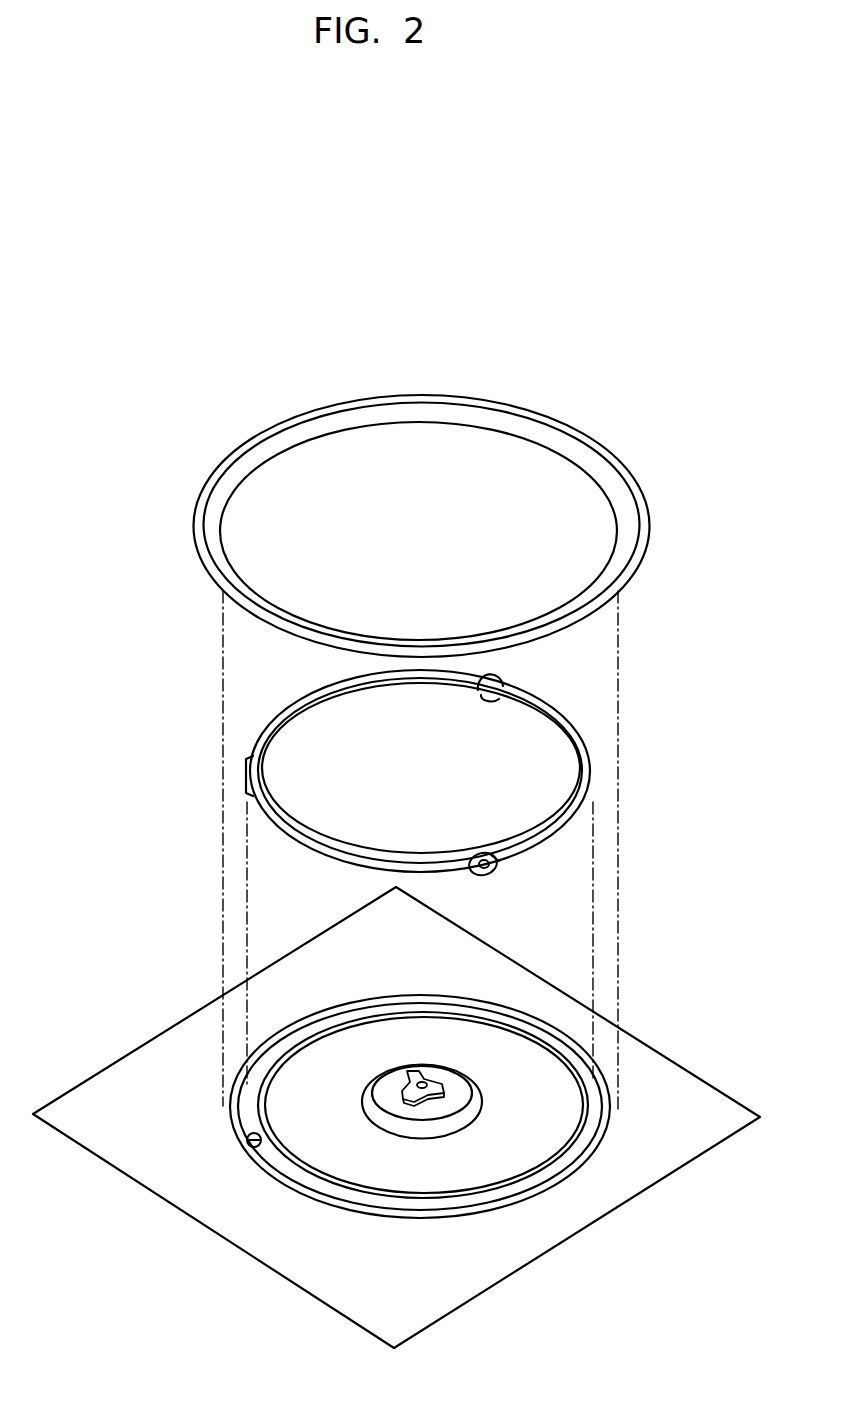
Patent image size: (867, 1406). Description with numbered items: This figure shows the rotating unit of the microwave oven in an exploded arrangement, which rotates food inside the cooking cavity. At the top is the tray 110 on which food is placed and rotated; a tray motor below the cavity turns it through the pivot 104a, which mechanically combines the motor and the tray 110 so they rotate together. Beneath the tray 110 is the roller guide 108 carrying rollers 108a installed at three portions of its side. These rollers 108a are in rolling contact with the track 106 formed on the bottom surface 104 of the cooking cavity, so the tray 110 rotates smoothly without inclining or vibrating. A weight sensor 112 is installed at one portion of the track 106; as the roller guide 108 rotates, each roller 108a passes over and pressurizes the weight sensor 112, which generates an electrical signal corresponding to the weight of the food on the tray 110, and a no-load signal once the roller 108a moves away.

The bottom surface 104 is at (665, 1072).
The pivot 104a is at (413, 1073).
The track 106 is at (580, 1153).
The roller guide 108 is at (588, 752).
The rollers 108a is at (498, 872).
The tray 110 is at (623, 470).
The weight sensor 112 is at (250, 1137).